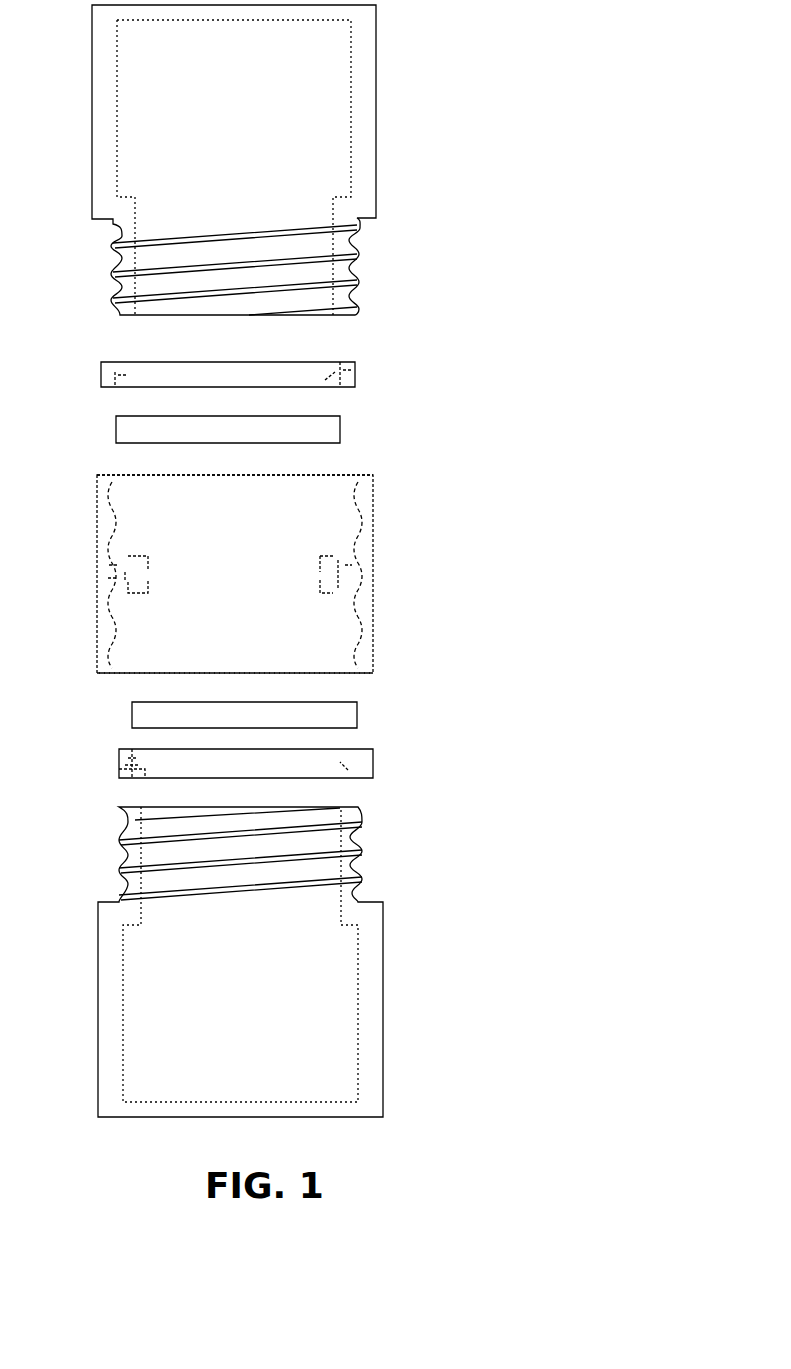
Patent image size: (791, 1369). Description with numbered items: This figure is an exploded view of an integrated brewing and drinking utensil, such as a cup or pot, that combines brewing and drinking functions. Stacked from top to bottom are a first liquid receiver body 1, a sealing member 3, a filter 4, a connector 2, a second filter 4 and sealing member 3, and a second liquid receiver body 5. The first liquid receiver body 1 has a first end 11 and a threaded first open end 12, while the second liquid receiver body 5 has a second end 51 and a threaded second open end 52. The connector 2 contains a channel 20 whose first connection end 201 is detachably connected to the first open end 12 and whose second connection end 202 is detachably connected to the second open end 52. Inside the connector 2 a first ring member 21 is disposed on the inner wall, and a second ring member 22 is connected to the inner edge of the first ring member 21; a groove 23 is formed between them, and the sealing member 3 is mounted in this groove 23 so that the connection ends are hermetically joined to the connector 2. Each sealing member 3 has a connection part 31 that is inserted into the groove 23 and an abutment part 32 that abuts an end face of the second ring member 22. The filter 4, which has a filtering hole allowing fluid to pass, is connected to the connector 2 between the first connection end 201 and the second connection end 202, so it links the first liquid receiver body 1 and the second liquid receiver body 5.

The first liquid receiver body 1 is at (367, 122).
The first end 11 is at (327, 35).
The first open end 12 is at (110, 290).
The connector 2 is at (362, 548).
The channel 20 is at (283, 548).
The first connection end 201 is at (283, 495).
The second connection end 202 is at (283, 665).
The first ring member 21 is at (118, 577).
The second ring member 22 is at (152, 568).
The groove 23 is at (345, 590).
The sealing member 3 is at (101, 372).
The connection part 31 is at (347, 380).
The abutment part 32 is at (330, 370).
The filter 4 is at (330, 432).
The second liquid receiver body 5 is at (108, 1000).
The second end 51 is at (343, 1092).
The second open end 52 is at (347, 865).